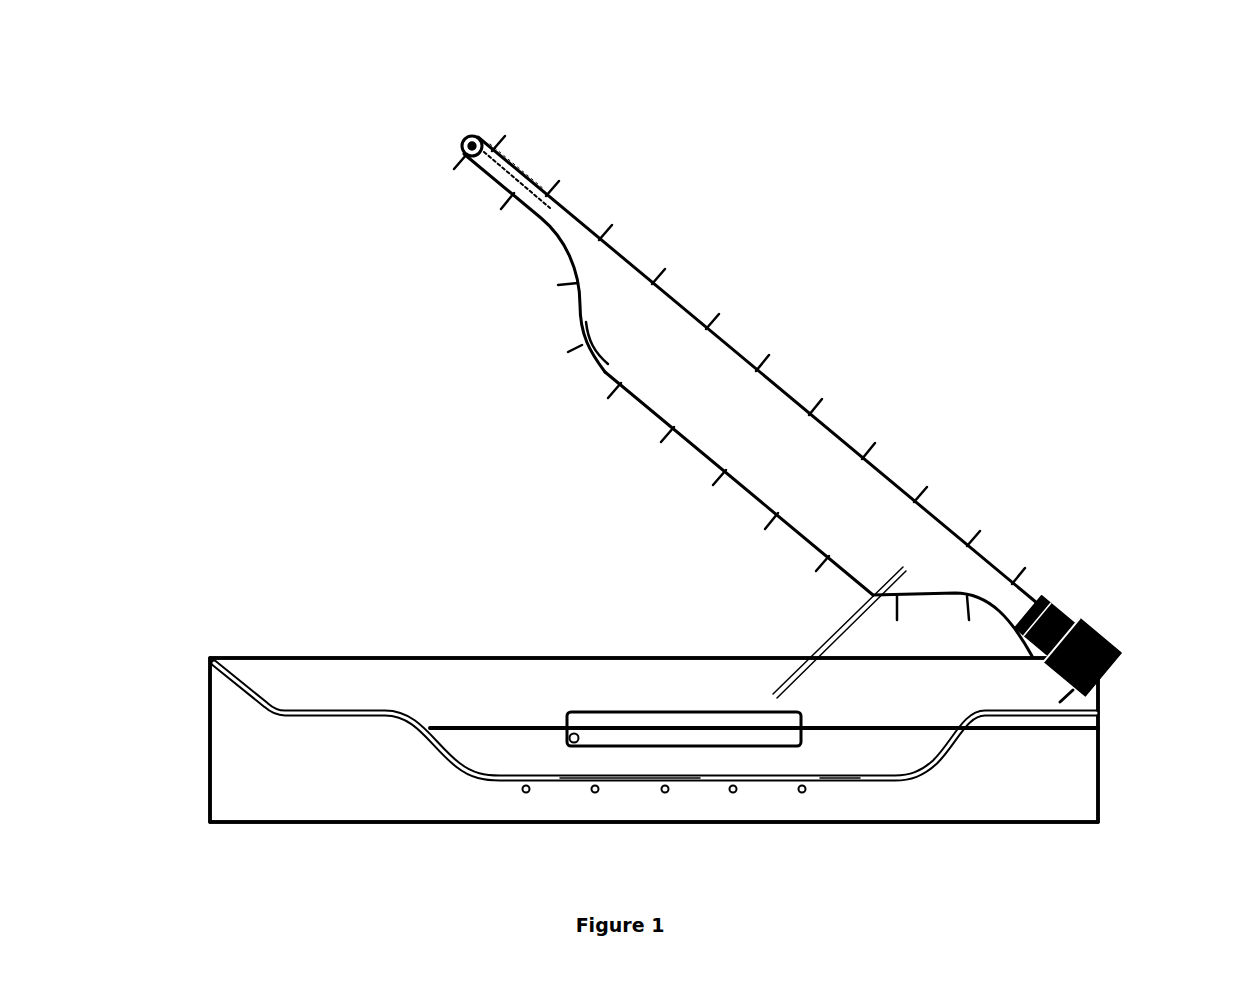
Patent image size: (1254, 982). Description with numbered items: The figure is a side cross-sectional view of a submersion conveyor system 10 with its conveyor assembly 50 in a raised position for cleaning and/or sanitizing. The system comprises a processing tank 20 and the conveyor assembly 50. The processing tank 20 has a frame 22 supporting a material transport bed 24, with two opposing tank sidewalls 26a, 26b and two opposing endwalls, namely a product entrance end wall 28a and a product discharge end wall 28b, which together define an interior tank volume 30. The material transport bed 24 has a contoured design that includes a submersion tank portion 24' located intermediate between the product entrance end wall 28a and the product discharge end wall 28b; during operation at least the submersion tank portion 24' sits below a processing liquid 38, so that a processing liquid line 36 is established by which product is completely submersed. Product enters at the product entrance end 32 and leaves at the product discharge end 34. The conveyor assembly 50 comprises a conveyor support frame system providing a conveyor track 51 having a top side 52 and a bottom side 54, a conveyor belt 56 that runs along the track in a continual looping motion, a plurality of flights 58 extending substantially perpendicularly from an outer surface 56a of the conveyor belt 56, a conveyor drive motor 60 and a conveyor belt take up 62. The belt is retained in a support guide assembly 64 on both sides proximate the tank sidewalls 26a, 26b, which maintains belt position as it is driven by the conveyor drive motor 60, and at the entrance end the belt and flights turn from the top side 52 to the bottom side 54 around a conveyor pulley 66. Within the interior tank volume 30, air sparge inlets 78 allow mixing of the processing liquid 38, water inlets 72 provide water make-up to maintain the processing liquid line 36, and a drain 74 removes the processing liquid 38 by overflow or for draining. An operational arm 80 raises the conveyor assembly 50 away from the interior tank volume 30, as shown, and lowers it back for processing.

The submersion conveyor system 10 is at (130, 180).
The processing tank 20 is at (302, 628).
The frame 22 is at (207, 808).
The material transport bed 24 is at (655, 728).
The submersion tank portion 24' is at (630, 823).
The tank sidewall 26a is at (957, 832).
The tank sidewall 26b is at (457, 652).
The product entrance end wall 28a is at (208, 768).
The product discharge end wall 28b is at (1100, 772).
The interior tank volume 30 is at (598, 690).
The product entrance end 32 is at (195, 640).
The product discharge end 34 is at (1117, 698).
The processing liquid line 36 is at (1100, 730).
The processing liquid 38 is at (840, 745).
The conveyor assembly 50 is at (808, 180).
The conveyor track 51 is at (550, 306).
The top side 52 is at (805, 352).
The bottom side 54 is at (678, 486).
The conveyor belt 56 is at (600, 362).
The outer surface 56a is at (722, 336).
The flights 58 is at (655, 270).
The conveyor drive motor 60 is at (1108, 648).
The conveyor belt take up 62 is at (518, 160).
The support guide assembly 64 is at (578, 326).
The conveyor pulley 66 is at (477, 128).
The water inlets 72 is at (595, 793).
The drain 74 is at (568, 735).
The air sparge inlets 78 is at (526, 793).
The operational arm 80 is at (842, 630).